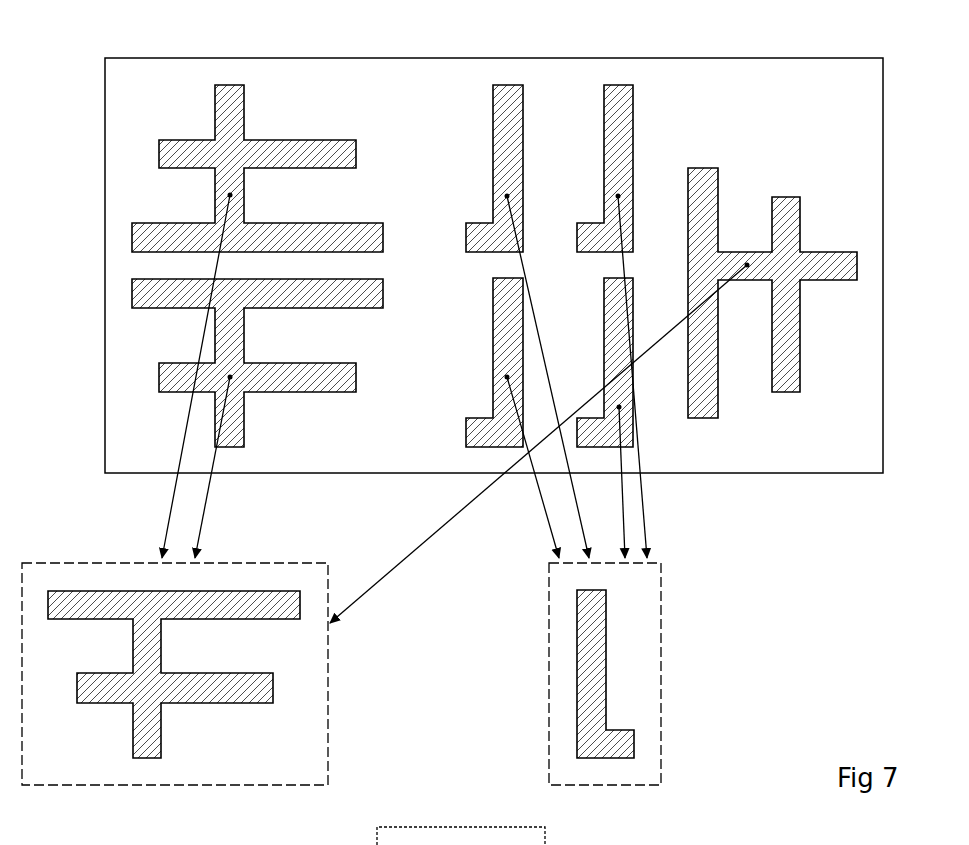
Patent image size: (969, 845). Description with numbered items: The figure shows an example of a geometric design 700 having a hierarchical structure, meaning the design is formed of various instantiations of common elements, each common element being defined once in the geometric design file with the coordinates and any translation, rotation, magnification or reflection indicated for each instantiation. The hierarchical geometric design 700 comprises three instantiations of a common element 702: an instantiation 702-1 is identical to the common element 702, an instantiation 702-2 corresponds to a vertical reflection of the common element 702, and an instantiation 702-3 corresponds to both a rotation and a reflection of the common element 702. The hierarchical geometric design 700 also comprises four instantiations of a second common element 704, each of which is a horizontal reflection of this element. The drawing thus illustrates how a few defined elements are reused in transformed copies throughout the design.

The hierarchical geometric design 700 is at (815, 70).
The instantiation 702-1 is at (344, 338).
The instantiation 702-2 is at (344, 193).
The instantiation 702-3 is at (790, 186).
The common element 702 is at (263, 568).
The common element 704 is at (648, 607).